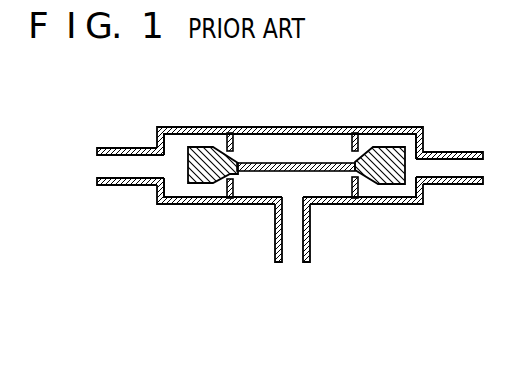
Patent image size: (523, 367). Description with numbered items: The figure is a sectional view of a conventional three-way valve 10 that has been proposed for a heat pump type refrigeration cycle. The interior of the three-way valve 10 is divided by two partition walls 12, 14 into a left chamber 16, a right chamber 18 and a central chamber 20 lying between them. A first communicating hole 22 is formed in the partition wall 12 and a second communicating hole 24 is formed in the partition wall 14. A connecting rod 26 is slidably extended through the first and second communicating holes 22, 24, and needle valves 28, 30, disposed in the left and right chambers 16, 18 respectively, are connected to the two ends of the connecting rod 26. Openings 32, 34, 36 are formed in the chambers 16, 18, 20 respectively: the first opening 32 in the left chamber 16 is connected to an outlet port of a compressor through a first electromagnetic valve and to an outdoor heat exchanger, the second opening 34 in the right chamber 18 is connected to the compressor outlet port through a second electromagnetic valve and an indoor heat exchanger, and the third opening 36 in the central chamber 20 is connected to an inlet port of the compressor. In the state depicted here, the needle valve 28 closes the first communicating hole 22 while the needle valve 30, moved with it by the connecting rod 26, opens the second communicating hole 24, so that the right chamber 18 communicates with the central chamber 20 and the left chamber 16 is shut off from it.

The three-way valve 10 is at (212, 126).
The partition wall 12 is at (229, 196).
The partition wall 14 is at (366, 188).
The left chamber 16 is at (172, 140).
The right chamber 18 is at (367, 143).
The central chamber 20 is at (277, 143).
The first communicating hole 22 is at (233, 152).
The second communicating hole 24 is at (352, 174).
The connecting rod 26 is at (297, 155).
The needle valve 28 is at (200, 181).
The needle valve 30 is at (388, 152).
The first opening 32 is at (160, 165).
The second opening 34 is at (420, 166).
The third opening 36 is at (290, 198).